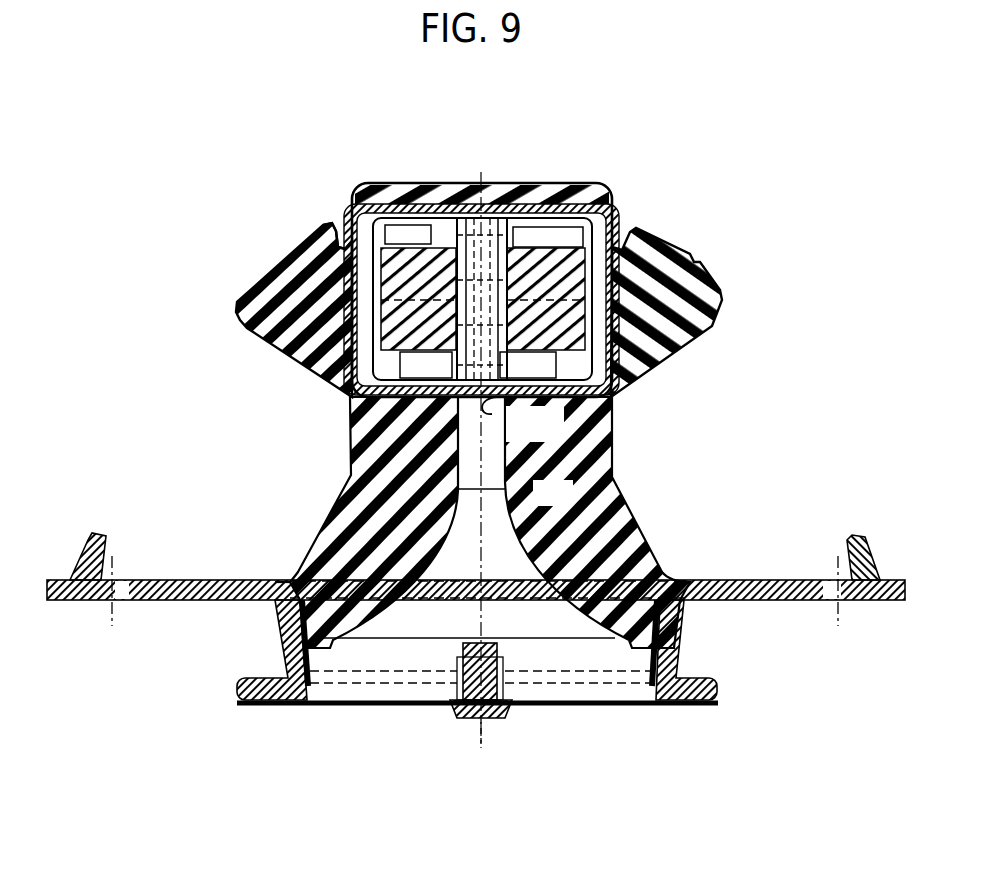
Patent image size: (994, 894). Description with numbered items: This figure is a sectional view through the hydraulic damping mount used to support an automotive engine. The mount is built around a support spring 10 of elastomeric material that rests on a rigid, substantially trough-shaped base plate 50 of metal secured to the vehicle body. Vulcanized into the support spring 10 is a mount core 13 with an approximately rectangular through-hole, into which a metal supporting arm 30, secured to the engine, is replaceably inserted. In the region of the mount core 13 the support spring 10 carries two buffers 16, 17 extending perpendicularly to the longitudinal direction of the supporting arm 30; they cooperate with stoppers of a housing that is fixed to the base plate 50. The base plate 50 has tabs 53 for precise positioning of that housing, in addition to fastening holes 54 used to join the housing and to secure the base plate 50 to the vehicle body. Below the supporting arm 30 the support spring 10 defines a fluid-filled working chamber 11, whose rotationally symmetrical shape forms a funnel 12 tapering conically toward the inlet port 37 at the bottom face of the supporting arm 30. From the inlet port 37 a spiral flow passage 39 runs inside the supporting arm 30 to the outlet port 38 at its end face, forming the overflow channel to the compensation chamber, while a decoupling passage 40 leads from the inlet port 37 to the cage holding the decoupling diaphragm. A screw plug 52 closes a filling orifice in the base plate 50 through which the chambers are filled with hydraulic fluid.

The support spring 10 is at (346, 487).
The working chamber 11 is at (532, 635).
The funnel 12 is at (505, 522).
The mount core 13 is at (606, 199).
The buffer 16 is at (692, 262).
The buffer 17 is at (275, 262).
The supporting arm 30 is at (352, 240).
The inlet port 37 is at (490, 413).
The outlet port 38 is at (405, 199).
The flow passage 39 is at (356, 400).
The decoupling passage 40 is at (489, 205).
The base plate 50 is at (750, 581).
The screw plug 52 is at (495, 720).
The tab 53 is at (856, 538).
The fastening hole 54 is at (850, 602).